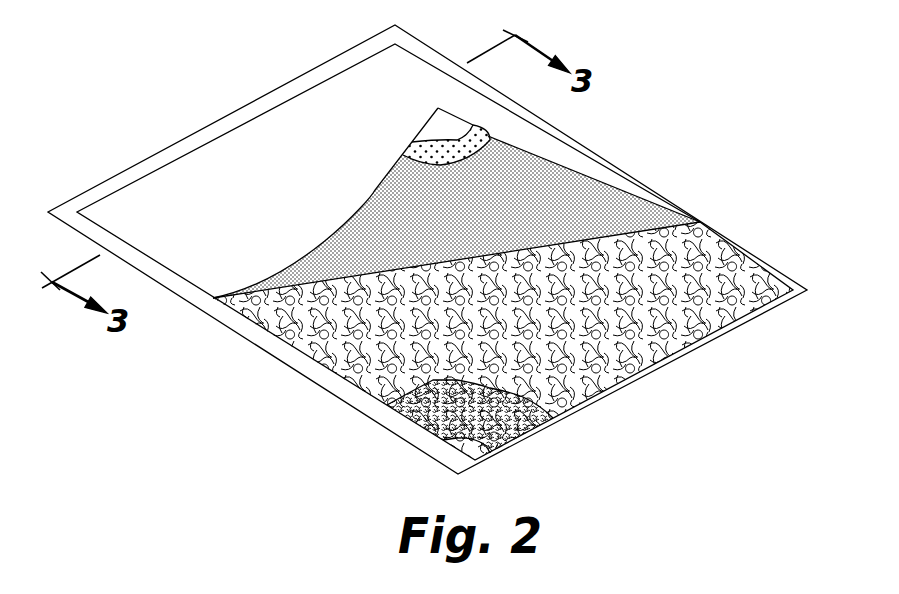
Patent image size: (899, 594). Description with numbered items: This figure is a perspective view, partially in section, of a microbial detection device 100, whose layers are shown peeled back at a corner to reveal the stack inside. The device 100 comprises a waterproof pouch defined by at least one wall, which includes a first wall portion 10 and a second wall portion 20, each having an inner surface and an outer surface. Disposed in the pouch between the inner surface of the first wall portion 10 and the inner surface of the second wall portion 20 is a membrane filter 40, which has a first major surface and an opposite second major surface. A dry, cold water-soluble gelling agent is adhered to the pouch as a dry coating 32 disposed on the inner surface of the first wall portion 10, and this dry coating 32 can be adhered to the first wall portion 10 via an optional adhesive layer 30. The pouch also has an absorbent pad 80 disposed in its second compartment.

The device 100 is at (427, 264).
The first wall portion 10 is at (440, 123).
The second wall portion 20 is at (478, 455).
The adhesive layer 30 is at (418, 152).
The dry coating 32 is at (372, 210).
The membrane filter 40 is at (375, 383).
The absorbent pad 80 is at (527, 425).